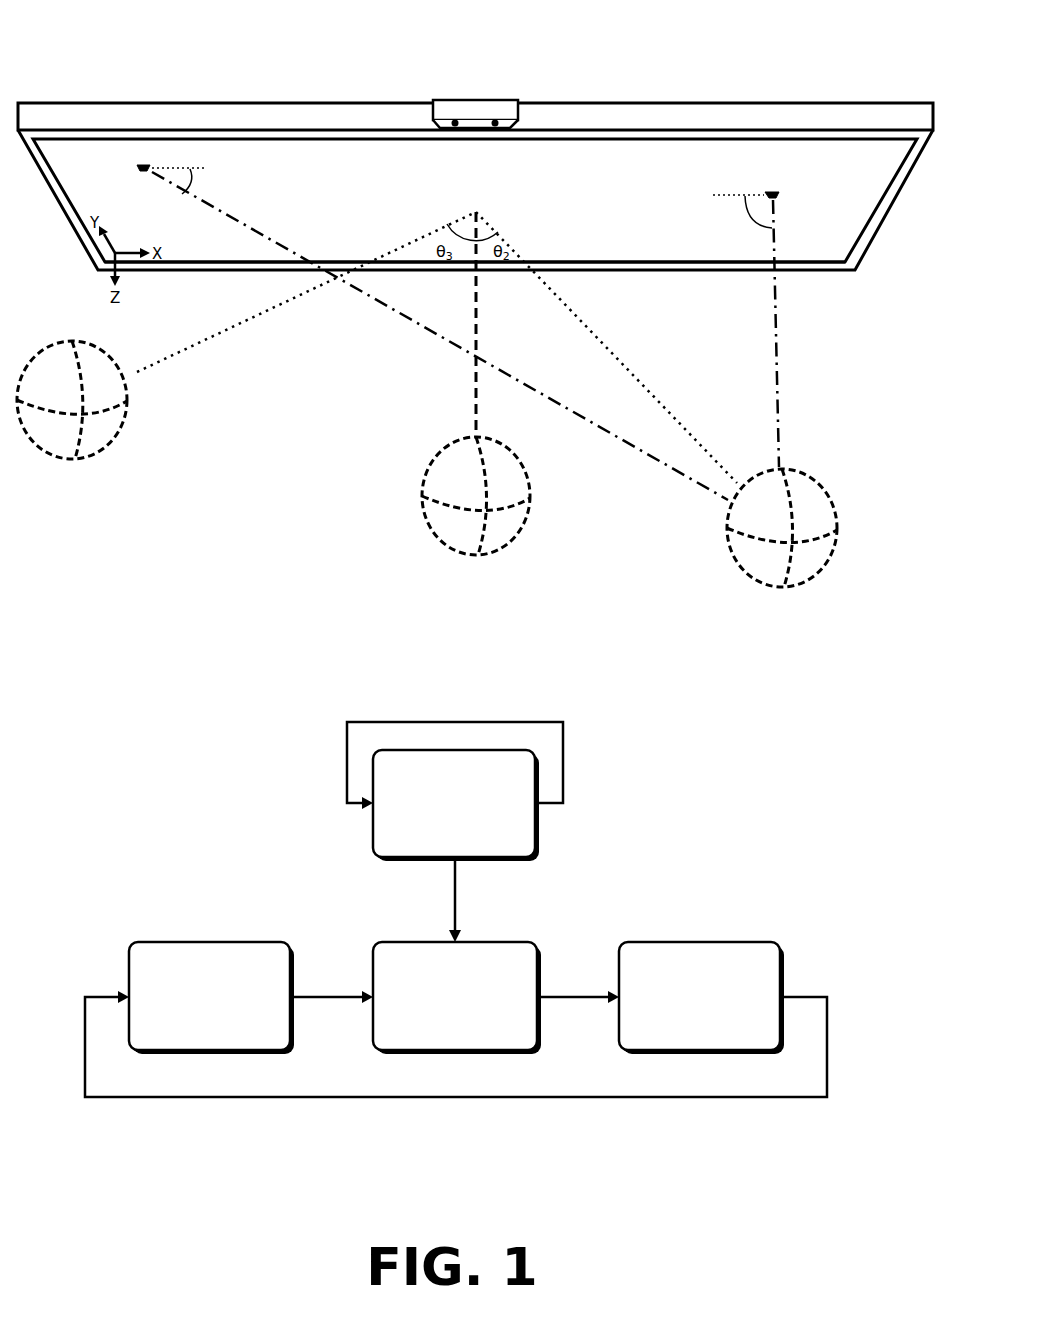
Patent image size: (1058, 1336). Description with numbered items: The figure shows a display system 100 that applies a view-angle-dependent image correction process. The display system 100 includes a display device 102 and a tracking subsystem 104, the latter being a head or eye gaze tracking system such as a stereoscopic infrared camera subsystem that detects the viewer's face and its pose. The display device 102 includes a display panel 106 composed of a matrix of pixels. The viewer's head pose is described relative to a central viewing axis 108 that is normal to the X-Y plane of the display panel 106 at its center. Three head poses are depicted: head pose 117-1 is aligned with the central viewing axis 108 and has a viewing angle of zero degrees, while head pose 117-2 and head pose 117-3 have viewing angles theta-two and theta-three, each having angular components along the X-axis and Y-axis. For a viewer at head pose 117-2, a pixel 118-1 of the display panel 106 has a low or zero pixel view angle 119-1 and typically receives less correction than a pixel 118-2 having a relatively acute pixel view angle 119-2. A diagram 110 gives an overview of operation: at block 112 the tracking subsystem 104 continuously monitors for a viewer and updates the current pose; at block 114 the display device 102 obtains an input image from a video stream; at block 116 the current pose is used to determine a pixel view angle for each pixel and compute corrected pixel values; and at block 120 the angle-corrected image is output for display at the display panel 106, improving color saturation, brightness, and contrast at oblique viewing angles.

The display system 100 is at (190, 70).
The display device 102 is at (86, 99).
The tracking subsystem 104 is at (447, 96).
The display panel 106 is at (683, 248).
The central viewing axis 108 is at (474, 405).
The diagram 110 is at (278, 844).
The head/eye tracking block 112 is at (456, 805).
The image input block 114 is at (211, 998).
The angle-dependent correction block 116 is at (457, 998).
The head pose 117-1 is at (420, 498).
The head pose 117-2 is at (838, 539).
The head pose 117-3 is at (128, 402).
The pixel 118-1 is at (781, 196).
The pixel 118-2 is at (135, 168).
The pixel view angle 119-1 is at (742, 213).
The pixel view angle 119-2 is at (197, 184).
The corrected image display block 120 is at (701, 998).